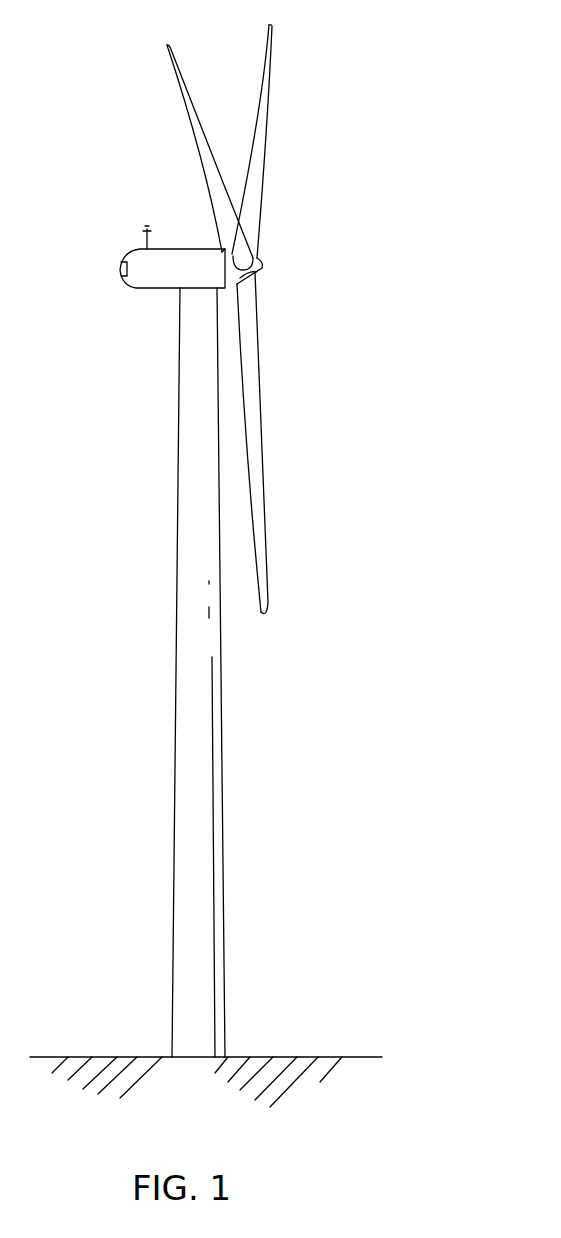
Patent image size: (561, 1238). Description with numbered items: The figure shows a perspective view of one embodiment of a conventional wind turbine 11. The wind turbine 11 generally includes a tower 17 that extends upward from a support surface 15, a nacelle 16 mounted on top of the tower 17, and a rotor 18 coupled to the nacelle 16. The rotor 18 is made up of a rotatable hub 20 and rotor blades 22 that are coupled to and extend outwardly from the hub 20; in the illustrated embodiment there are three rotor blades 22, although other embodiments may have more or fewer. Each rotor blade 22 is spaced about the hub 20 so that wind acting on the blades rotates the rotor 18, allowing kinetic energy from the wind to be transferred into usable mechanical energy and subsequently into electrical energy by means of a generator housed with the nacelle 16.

The wind turbine 11 is at (370, 122).
The support surface 15 is at (288, 1057).
The nacelle 16 is at (162, 290).
The tower 17 is at (186, 780).
The rotor 18 is at (289, 277).
The rotatable hub 20 is at (270, 268).
The rotor blade 22 is at (188, 122).